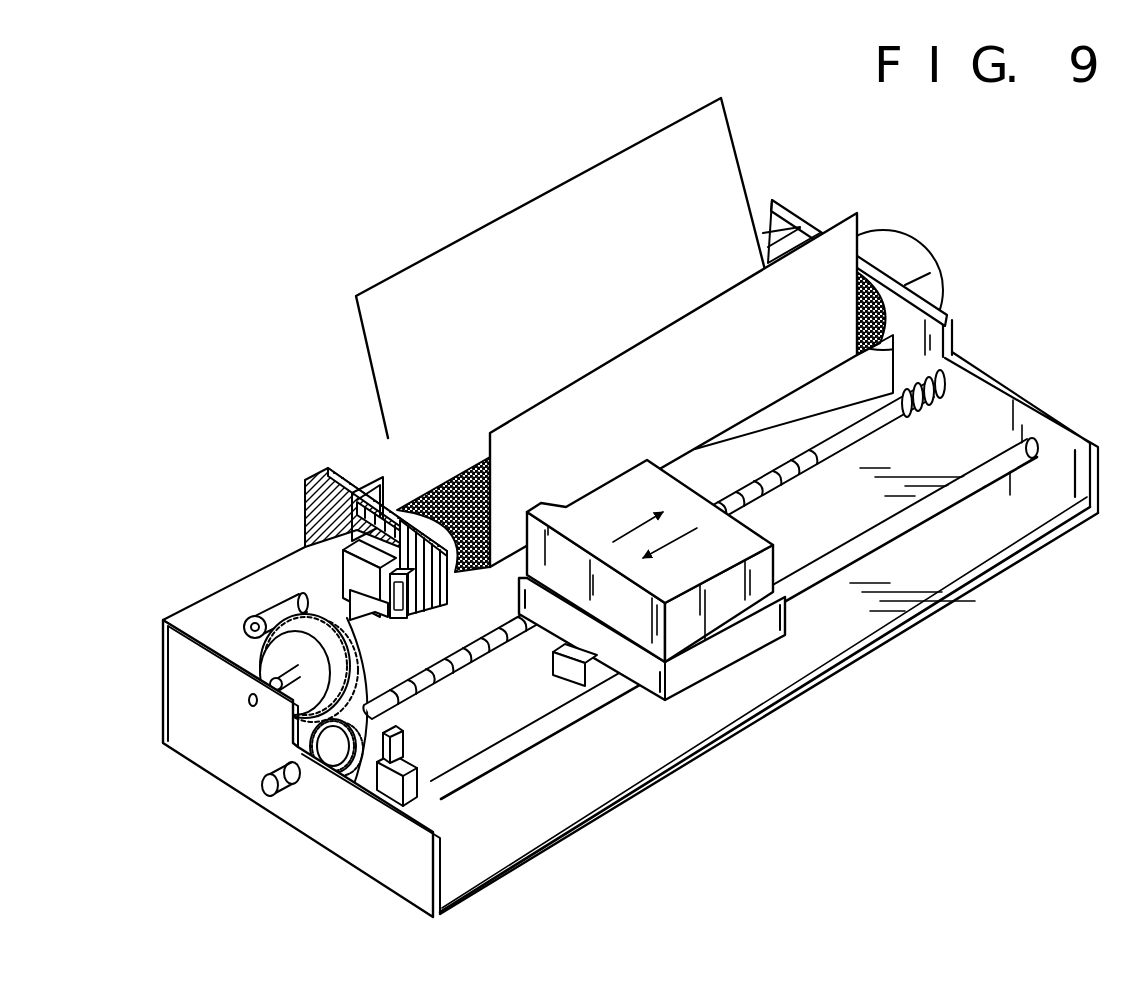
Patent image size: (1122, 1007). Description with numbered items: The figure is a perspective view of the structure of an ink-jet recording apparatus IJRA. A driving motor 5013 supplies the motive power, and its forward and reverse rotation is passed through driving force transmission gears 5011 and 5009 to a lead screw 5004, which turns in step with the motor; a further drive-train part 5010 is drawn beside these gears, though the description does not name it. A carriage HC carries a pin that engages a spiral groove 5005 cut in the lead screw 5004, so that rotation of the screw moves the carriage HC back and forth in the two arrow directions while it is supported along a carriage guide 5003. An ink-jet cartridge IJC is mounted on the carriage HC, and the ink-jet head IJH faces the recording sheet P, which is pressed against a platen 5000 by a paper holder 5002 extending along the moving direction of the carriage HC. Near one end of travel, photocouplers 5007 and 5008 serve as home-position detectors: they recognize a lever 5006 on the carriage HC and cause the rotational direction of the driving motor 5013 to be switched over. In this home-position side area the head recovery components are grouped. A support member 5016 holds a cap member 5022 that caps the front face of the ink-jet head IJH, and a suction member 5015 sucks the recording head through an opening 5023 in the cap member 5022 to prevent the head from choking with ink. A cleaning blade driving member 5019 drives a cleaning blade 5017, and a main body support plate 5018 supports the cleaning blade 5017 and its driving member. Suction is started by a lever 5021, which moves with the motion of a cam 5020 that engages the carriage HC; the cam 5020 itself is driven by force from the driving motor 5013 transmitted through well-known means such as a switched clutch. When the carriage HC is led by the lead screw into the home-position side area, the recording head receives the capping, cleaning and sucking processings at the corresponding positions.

The recording paper P is at (716, 152).
The ink-jet recording apparatus IJRA is at (805, 200).
The platen 5000 is at (888, 308).
The paper holder 5002 is at (778, 414).
The carriage guide 5003 is at (607, 703).
The lead screw 5004 is at (503, 634).
The spiral groove 5005 is at (455, 672).
The lever 5006 is at (570, 665).
The photocoupler 5007 is at (437, 787).
The photocoupler 5008 is at (383, 775).
The driving force transmission gear 5009 is at (318, 757).
The carriage motor 5010 is at (305, 722).
The driving force transmission gear 5011 is at (277, 657).
The driving motor 5013 is at (343, 553).
The suction member 5015 is at (395, 512).
The support member 5016 is at (405, 503).
The cleaning blade 5017 is at (441, 505).
The main body support plate 5018 is at (358, 490).
The cleaning blade driving member 5019 is at (305, 512).
The cam 5020 is at (350, 730).
The lever 5021 is at (285, 597).
The cap member 5022 is at (493, 517).
The opening 5023 is at (406, 616).
The ink-jet head IJH is at (553, 498).
The ink-jet cartridge IJC is at (760, 527).
The carriage HC is at (760, 628).